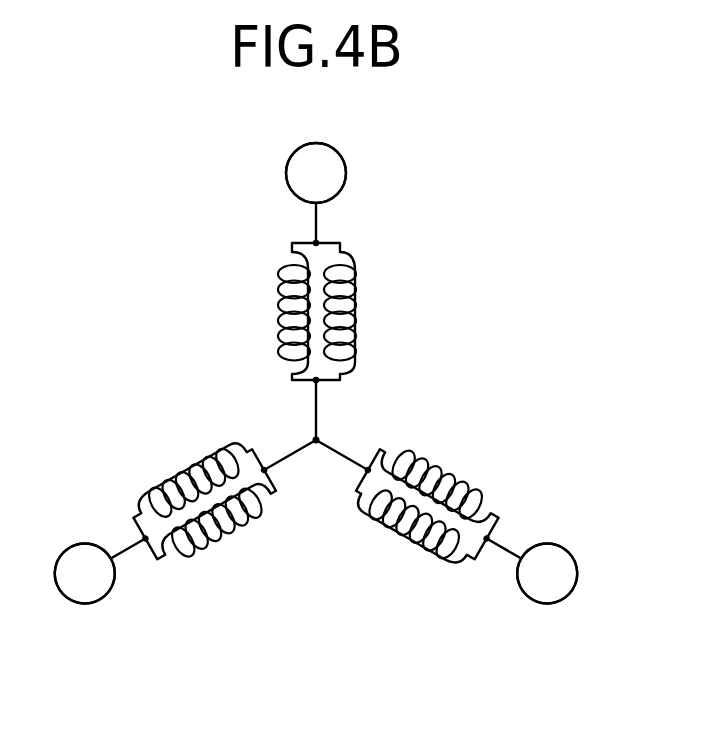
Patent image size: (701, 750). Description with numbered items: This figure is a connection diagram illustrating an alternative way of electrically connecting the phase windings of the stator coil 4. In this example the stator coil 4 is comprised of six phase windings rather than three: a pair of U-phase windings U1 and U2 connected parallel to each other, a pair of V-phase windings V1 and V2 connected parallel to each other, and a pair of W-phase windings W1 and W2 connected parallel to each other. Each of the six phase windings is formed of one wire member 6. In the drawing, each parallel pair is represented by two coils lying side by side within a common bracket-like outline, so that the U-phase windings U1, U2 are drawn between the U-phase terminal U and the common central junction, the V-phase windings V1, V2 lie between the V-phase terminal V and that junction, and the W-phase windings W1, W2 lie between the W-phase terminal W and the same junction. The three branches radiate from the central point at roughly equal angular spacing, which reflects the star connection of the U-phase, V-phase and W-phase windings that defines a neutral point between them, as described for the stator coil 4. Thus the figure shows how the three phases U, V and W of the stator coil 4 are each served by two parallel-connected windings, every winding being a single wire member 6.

The stator coil 4 is at (410, 180).
The wire member 6 is at (392, 314).
The U-phase winding U1 is at (356, 270).
The U-phase winding U2 is at (280, 282).
The V-phase winding V1 is at (428, 558).
The V-phase winding V2 is at (465, 492).
The W-phase winding W1 is at (158, 494).
The W-phase winding W2 is at (203, 550).
The U-phase U is at (316, 173).
The V-phase V is at (547, 574).
The W-phase W is at (85, 574).